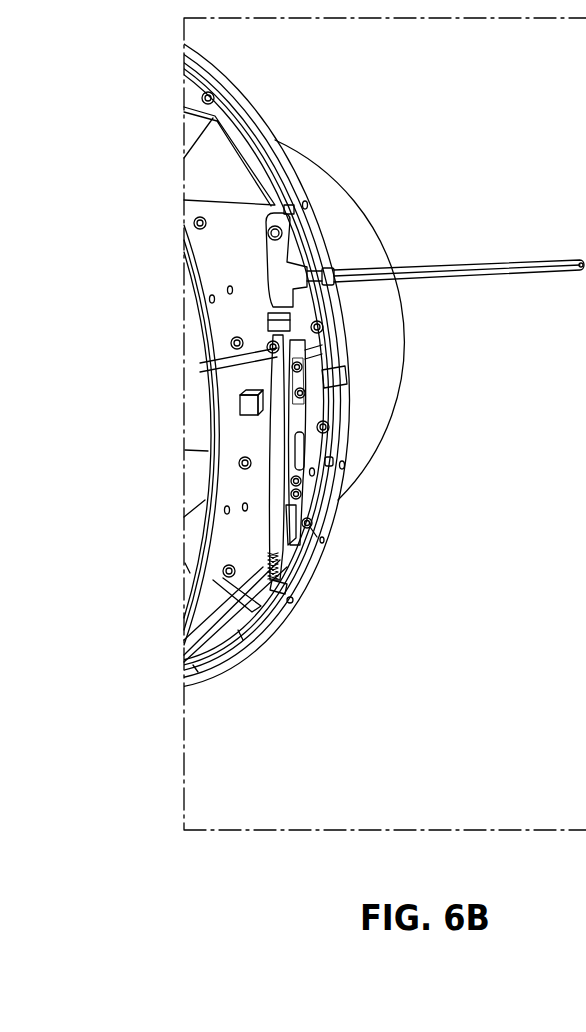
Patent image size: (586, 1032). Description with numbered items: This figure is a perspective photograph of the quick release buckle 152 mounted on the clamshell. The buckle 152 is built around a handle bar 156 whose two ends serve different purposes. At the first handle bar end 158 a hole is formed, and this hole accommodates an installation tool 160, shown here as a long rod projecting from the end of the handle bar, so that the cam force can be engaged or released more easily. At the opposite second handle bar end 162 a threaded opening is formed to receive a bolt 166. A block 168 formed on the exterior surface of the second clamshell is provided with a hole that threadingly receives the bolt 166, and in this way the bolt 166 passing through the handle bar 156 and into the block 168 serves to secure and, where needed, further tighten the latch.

The quick release buckle 152 is at (261, 307).
The handle bar 156 is at (288, 423).
The first handle bar end 158 is at (265, 328).
The installation tool 160 is at (297, 251).
The second handle bar end 162 is at (260, 550).
The bolt 166 is at (258, 586).
The block 168 is at (281, 490).